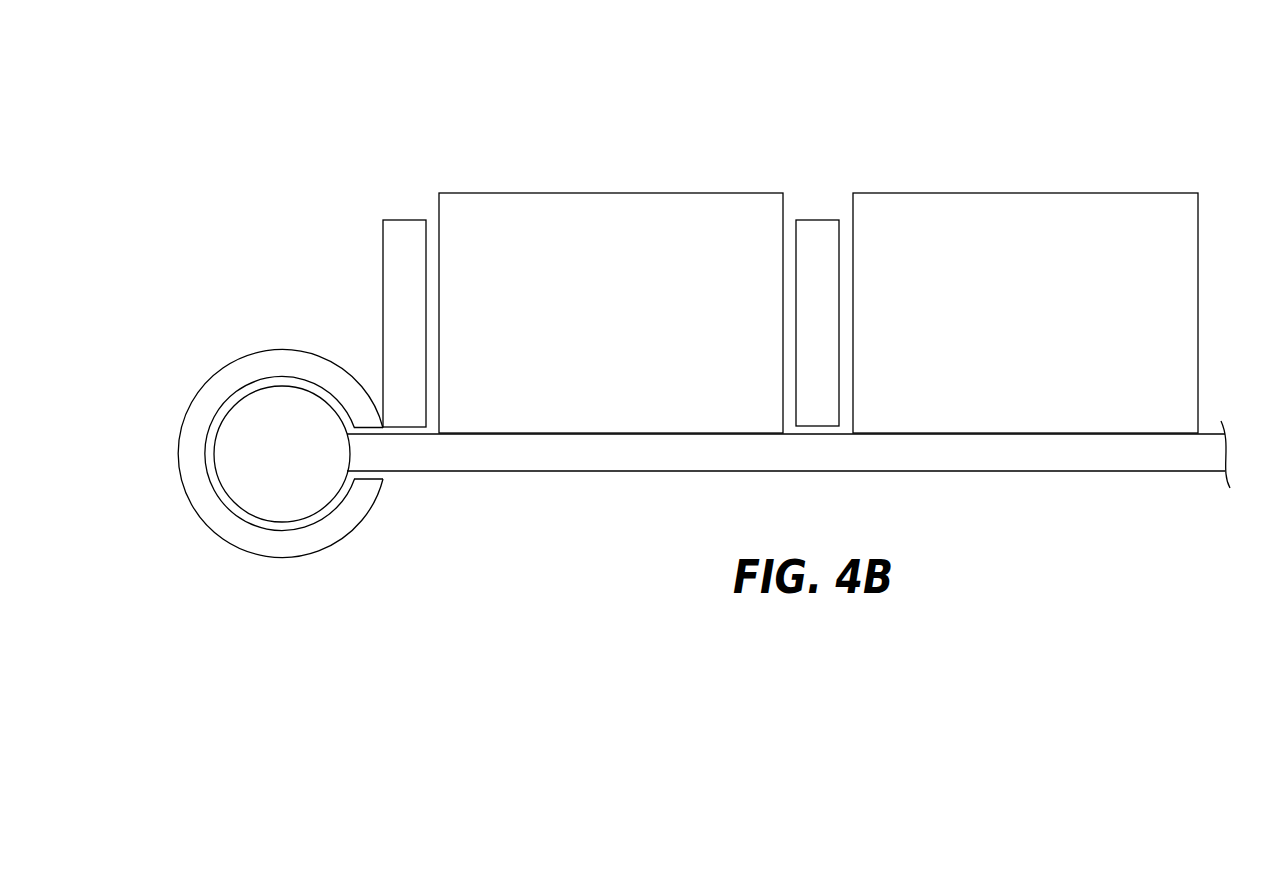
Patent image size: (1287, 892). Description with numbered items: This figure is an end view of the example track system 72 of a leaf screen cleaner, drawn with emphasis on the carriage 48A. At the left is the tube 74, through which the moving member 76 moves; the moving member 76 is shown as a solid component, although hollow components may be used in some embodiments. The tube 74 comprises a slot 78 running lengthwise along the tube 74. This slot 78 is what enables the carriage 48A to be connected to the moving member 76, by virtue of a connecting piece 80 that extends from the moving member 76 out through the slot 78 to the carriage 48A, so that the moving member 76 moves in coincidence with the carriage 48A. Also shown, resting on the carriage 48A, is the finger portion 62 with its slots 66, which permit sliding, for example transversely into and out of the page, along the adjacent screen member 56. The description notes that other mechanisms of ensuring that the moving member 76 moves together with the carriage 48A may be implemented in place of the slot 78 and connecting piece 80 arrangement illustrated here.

The track system 72 is at (291, 336).
The tube 74 is at (283, 348).
The moving member 76 is at (232, 414).
The slot 78 is at (407, 494).
The connecting piece 80 is at (423, 465).
The carriage 48A is at (1213, 457).
The slots 66 is at (818, 142).
The screen member 56 is at (818, 218).
The finger portion 62 is at (950, 202).